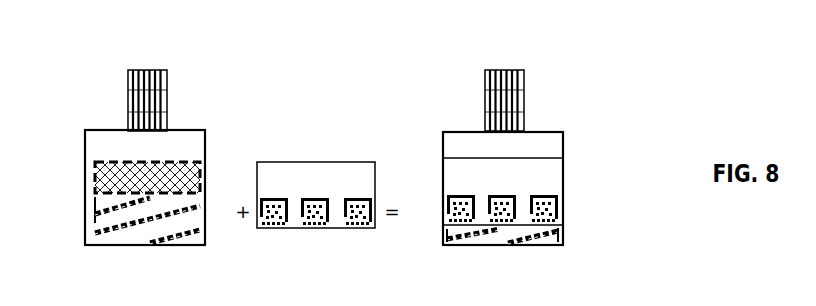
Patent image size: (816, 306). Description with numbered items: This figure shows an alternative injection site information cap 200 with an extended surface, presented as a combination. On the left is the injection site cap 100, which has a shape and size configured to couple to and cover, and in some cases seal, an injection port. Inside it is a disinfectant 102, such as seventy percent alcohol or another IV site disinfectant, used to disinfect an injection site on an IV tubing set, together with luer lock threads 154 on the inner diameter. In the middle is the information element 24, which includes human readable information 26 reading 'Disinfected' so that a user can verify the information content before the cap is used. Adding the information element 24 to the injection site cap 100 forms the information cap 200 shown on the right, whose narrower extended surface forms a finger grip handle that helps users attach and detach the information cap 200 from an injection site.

The injection site cap 100 is at (207, 148).
The disinfectant 102 is at (130, 162).
The luer lock threads 154 is at (105, 235).
The information element 24 is at (316, 205).
The human readable information 26 is at (310, 172).
The injection site information cap 200 is at (537, 147).